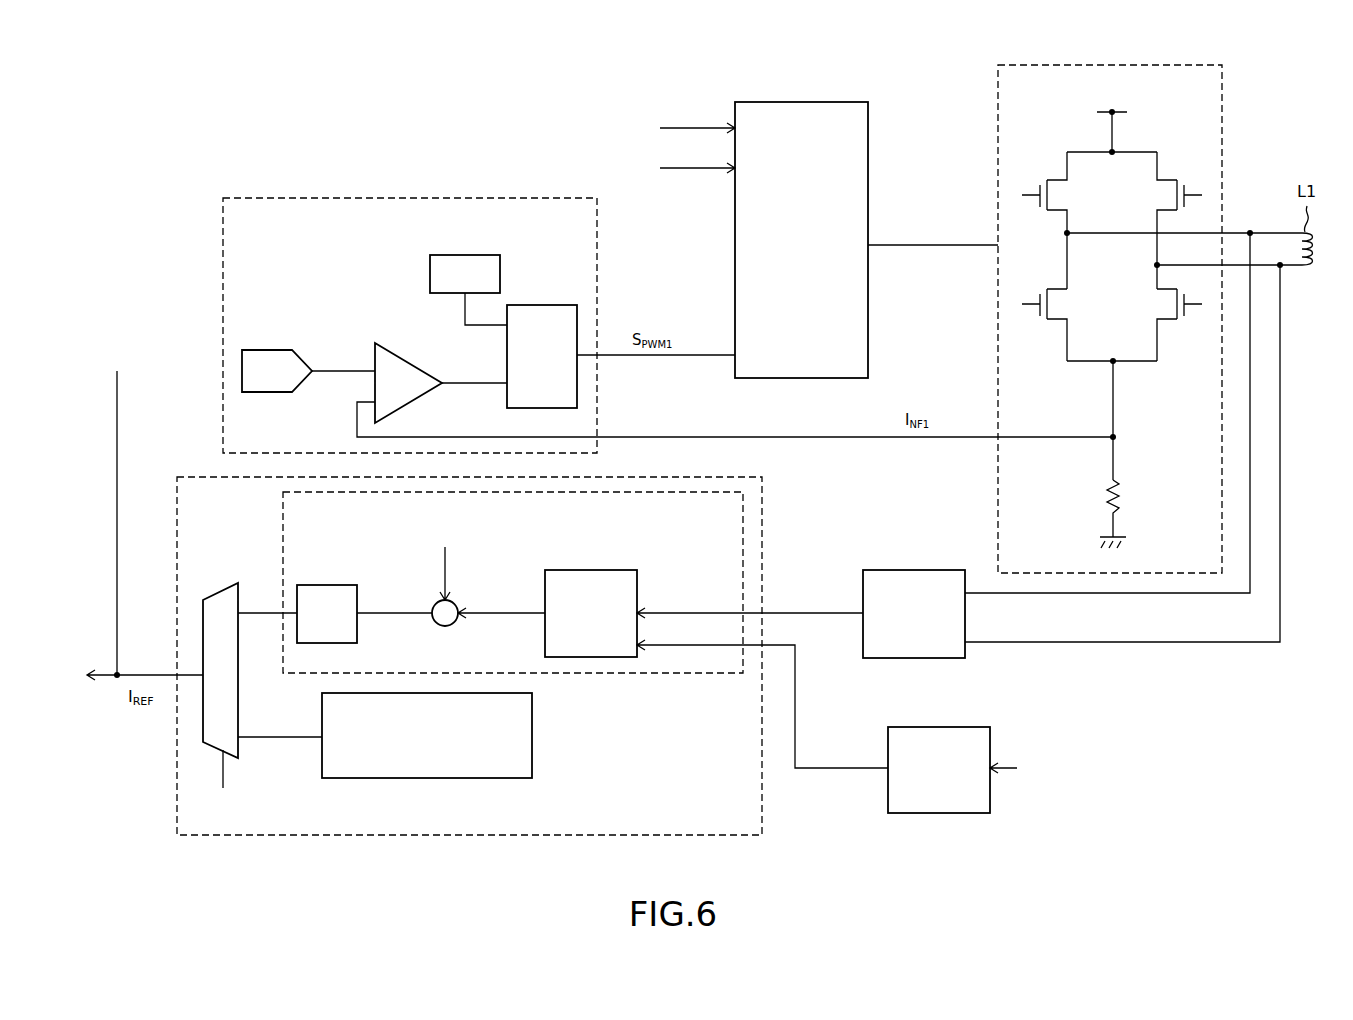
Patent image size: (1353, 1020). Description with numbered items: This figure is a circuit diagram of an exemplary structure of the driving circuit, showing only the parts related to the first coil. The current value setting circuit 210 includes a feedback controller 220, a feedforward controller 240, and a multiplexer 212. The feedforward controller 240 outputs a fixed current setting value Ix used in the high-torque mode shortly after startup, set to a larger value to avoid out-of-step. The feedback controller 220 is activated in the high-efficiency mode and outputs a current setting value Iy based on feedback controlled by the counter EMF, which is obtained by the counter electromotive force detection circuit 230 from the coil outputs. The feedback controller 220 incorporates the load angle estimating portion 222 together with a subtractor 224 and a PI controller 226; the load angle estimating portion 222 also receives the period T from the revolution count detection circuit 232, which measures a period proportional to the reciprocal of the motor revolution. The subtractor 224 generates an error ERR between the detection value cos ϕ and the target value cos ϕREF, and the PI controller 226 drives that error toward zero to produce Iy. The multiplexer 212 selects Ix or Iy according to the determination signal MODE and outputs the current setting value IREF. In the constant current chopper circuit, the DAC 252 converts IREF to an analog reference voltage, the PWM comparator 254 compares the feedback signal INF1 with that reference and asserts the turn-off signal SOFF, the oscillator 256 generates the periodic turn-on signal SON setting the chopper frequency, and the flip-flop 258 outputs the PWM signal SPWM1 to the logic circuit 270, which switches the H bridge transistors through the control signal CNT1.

The DAC 252 is at (253, 350).
The PWM comparator 254 is at (403, 353).
The oscillator 256 is at (468, 255).
The flip-flop 258 is at (535, 305).
The logic circuit 270 is at (807, 102).
The current value setting circuit 210 is at (762, 510).
The multiplexer 212 is at (225, 583).
The feedback controller 220 is at (677, 673).
The load angle estimating portion 222 is at (600, 570).
The subtractor 224 is at (458, 603).
The PI controller 226 is at (320, 585).
The counter electromotive force (EMF) detection circuit 230 is at (908, 570).
The revolution count detection circuit 232 is at (935, 727).
The feedforward controller 240 is at (532, 740).